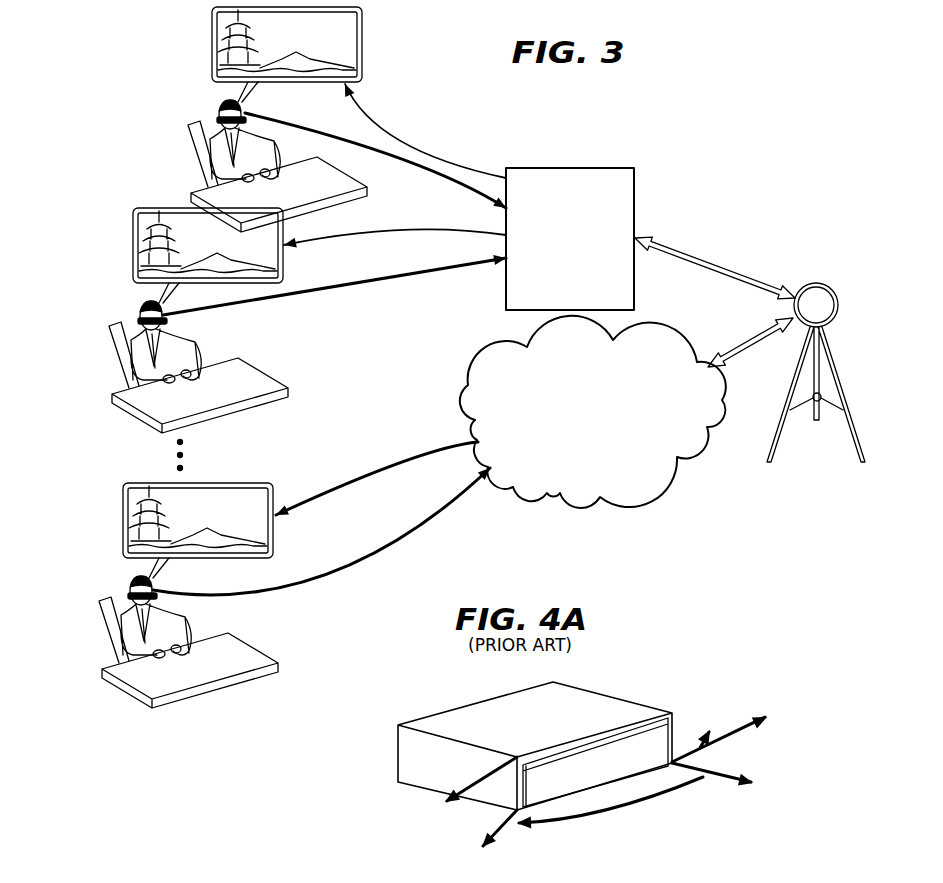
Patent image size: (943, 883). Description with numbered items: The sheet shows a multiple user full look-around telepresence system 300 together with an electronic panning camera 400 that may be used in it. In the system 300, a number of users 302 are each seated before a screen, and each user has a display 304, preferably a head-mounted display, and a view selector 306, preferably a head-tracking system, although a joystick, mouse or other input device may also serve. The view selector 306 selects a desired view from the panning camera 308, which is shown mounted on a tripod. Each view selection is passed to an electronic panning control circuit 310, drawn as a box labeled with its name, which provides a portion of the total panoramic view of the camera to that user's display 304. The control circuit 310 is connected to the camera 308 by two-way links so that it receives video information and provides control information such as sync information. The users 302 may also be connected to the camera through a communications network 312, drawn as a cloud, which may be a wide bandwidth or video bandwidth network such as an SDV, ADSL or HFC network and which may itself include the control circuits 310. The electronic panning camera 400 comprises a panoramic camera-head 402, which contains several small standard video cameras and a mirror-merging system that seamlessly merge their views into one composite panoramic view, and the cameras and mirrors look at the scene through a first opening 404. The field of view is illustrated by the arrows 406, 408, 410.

In FIG. 3, the video conferencing system with electronic panning 300 is at (728, 140).
In FIG. 3, the users 302 is at (200, 357).
In FIG. 3, the display 304 is at (140, 350).
In FIG. 3, the view selector 306 is at (146, 317).
In FIG. 3, the panning camera 308 is at (815, 283).
In FIG. 3, the electronic panning control circuit 310 is at (570, 168).
In FIG. 3, the communications network 312 is at (470, 376).
In FIG. 4A, the electronic panning camera 400 is at (723, 683).
In FIG. 4A, the panoramic camera-head 402 is at (448, 722).
In FIG. 4A, the first opening 404 is at (647, 736).
In FIG. 4A, the arrows 406 is at (493, 820).
In FIG. 4A, the arrows 408 is at (730, 772).
In FIG. 4A, the arrows 410 is at (690, 775).